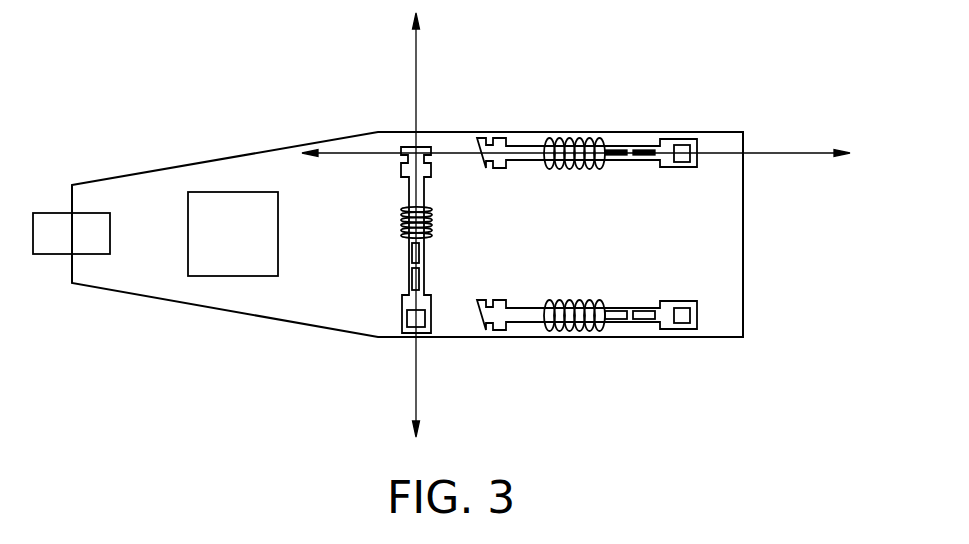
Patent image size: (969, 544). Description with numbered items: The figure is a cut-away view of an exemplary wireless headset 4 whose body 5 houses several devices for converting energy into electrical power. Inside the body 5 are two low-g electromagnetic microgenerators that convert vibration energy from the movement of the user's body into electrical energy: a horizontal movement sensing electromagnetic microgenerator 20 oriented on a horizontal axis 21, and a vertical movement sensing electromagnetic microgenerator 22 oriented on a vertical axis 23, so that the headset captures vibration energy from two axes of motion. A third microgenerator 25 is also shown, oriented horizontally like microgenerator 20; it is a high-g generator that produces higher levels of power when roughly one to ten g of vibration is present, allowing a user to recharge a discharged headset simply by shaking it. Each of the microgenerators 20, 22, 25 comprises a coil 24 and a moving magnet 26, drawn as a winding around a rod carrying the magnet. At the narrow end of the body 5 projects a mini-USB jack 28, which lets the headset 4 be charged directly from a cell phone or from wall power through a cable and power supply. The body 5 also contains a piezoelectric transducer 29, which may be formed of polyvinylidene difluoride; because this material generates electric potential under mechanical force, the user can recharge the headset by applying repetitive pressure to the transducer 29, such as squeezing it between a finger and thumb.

The wireless headset 4 is at (600, 352).
The body 5 is at (450, 338).
The horizontal movement sensing electromagnetic microgenerator 20 is at (527, 143).
The horizontal axis 21 is at (797, 153).
The vertical movement sensing electromagnetic microgenerator 22 is at (407, 193).
The vertical axis 23 is at (416, 68).
The coil 24 is at (565, 170).
The third microgenerator 25 is at (530, 304).
The moving magnet 26 is at (632, 165).
The mini-USB jack 28 is at (49, 213).
The piezoelectric transducer 29 is at (250, 248).